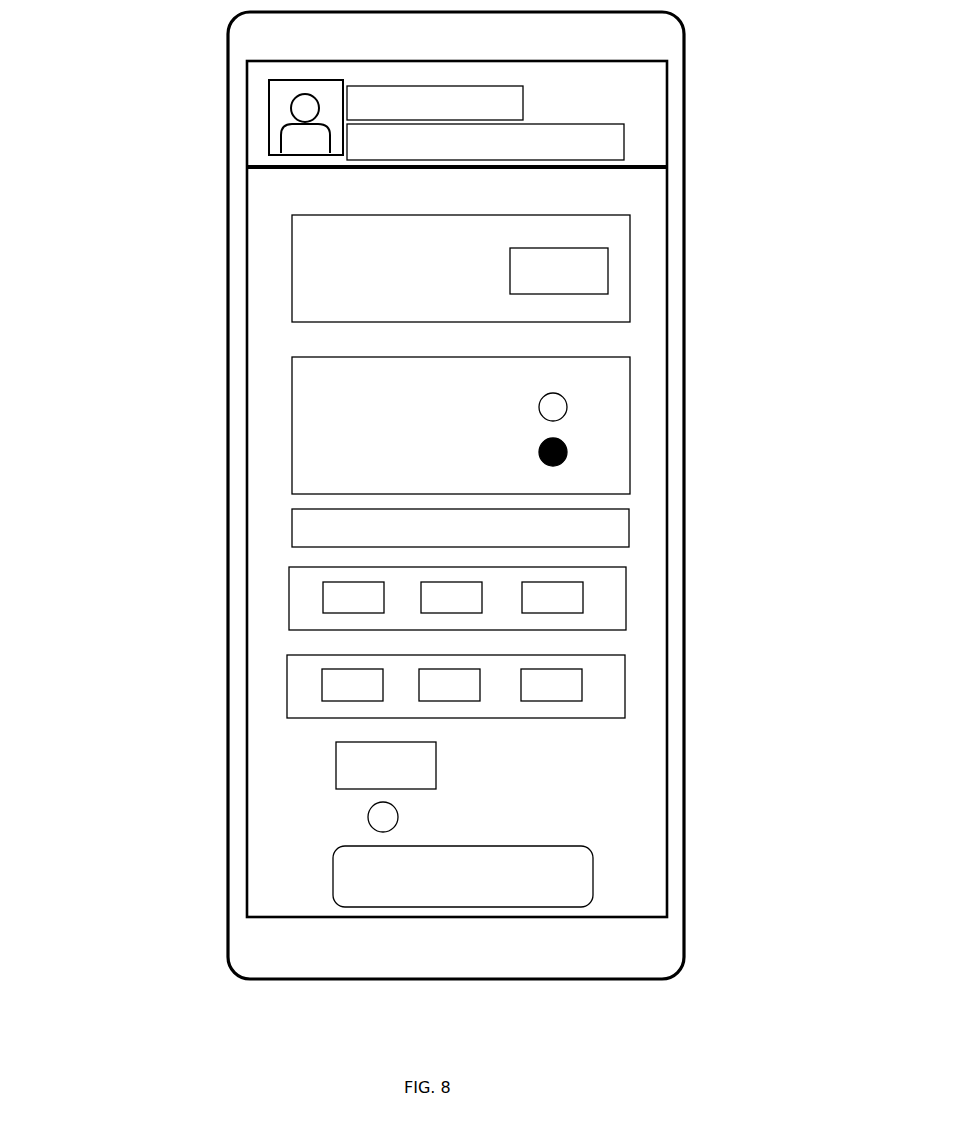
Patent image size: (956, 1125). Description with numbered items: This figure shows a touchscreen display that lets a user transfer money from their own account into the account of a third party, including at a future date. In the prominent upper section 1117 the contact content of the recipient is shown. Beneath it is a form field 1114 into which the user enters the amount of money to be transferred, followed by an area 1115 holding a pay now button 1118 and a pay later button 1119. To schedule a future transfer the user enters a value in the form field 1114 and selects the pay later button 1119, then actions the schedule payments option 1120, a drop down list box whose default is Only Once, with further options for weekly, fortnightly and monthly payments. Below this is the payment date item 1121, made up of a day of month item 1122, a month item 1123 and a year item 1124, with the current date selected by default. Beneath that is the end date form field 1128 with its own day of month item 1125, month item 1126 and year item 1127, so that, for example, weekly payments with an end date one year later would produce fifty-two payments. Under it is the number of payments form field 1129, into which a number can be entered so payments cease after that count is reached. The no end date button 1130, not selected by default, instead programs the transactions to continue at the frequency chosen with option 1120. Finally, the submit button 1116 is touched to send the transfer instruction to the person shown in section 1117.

The form field 1114 is at (317, 235).
The payment timing area 1115 is at (317, 378).
The submit button 1116 is at (353, 872).
The upper section 1117 is at (259, 90).
The pay now button 1118 is at (327, 407).
The pay later button 1119 is at (320, 453).
The schedule payments option 1120 is at (317, 530).
The payment date item 1121 is at (303, 587).
The day of month item 1122 is at (317, 606).
The month item 1123 is at (486, 592).
The year item 1124 is at (592, 596).
The day of month item 1125 is at (317, 693).
The month item 1126 is at (412, 705).
The year item 1127 is at (592, 685).
The end date form field 1128 is at (302, 677).
The number of payments form field 1129 is at (386, 765).
The no end date button 1130 is at (413, 817).